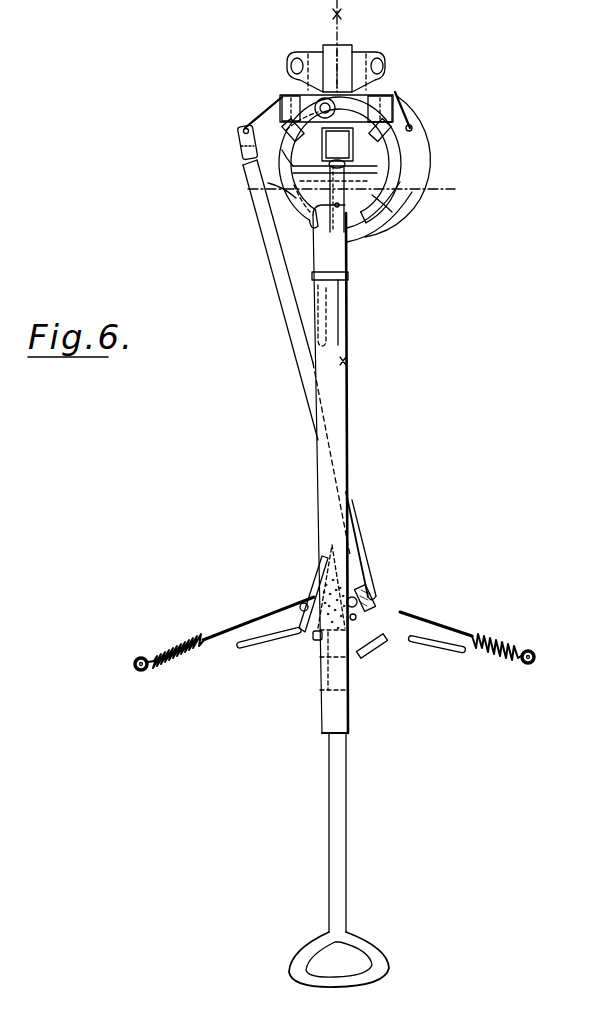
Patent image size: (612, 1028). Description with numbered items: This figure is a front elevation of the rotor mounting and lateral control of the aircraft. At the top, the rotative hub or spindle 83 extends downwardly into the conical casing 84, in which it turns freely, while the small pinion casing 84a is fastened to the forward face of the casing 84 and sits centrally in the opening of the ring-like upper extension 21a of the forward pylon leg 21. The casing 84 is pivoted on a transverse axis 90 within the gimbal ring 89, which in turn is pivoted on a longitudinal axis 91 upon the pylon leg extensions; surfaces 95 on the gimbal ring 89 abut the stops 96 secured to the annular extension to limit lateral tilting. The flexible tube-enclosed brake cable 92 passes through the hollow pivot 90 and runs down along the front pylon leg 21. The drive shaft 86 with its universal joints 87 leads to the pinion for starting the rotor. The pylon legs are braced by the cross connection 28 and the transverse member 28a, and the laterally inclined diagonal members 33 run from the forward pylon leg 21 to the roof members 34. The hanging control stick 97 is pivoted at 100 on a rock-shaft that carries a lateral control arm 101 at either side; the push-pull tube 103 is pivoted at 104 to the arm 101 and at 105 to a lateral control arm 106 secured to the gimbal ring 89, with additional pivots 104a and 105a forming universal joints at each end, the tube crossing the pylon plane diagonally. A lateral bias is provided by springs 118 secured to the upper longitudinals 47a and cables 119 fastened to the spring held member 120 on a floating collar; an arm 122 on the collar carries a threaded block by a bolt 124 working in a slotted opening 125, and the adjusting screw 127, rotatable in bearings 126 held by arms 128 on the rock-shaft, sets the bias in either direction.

The rotative hub or spindle 83 is at (344, 45).
The gimbal ring 89 is at (386, 76).
The transverse pivot axis 90 is at (214, 96).
The longitudinal pivot axis 91 is at (282, 102).
The lateral control arm 106 is at (262, 110).
The upper pivot 105 is at (240, 140).
The additional pivot 105a is at (244, 154).
The stop 96 is at (340, 162).
The abutment surface 95 is at (288, 139).
The pinion casing 84a is at (337, 148).
The conical casing 84 is at (300, 170).
The flexible tube-enclosed cable 92 is at (429, 160).
The ring-like upper extension 21a is at (402, 175).
The cross connection 28 is at (361, 187).
The transverse member 28a is at (292, 202).
The universal joint 87 is at (372, 218).
The shaft 86 is at (347, 250).
The push-pull tube 103 is at (276, 296).
The forward pylon leg 21 is at (351, 400).
The laterally inclined diagonal member 33 is at (355, 530).
The slotted opening 125 is at (369, 563).
The bearing 126 is at (325, 558).
The arm 128 is at (326, 580).
The lower pivot 104 is at (378, 593).
The additional pivot 104a is at (375, 585).
The lateral control arm 101 is at (386, 604).
The spring held member 120 is at (316, 600).
The arm 122 is at (368, 606).
The screw or bolt 124 is at (357, 612).
The cable 119 is at (256, 622).
The spring 118 is at (188, 652).
The upper longitudinal 47a is at (134, 672).
The roof member 34 is at (252, 645).
The stick pivot 100 is at (318, 641).
The adjusting screw 127 is at (386, 648).
The control stick 97 is at (348, 818).